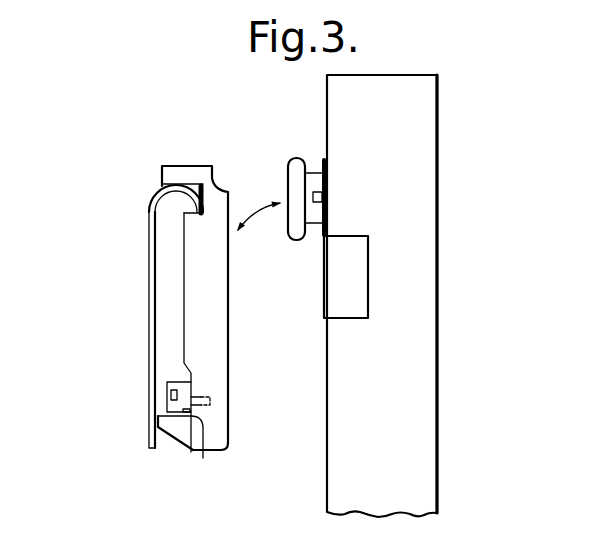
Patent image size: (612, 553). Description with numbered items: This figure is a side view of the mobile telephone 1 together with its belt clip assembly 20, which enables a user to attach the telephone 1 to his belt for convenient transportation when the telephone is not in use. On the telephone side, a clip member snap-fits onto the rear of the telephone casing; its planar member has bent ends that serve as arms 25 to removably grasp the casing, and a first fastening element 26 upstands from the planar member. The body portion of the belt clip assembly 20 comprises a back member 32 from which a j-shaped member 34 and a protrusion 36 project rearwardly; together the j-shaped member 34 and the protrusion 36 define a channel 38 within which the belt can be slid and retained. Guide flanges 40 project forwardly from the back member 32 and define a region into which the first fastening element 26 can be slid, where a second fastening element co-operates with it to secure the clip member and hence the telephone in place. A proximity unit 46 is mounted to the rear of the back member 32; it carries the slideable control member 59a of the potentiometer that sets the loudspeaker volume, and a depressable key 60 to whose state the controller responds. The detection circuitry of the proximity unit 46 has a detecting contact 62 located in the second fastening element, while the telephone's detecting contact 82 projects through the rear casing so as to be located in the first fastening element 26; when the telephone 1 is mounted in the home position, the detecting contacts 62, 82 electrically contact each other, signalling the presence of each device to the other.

The telephone 1 is at (438, 120).
The belt clip assembly 20 is at (145, 125).
The arms 25 is at (332, 287).
The first fastening element 26 is at (282, 157).
The back member 32 is at (192, 258).
The j-shaped member 34 is at (149, 369).
The protrusion 36 is at (178, 443).
The channel 38 is at (157, 425).
The guide flanges 40 is at (208, 312).
The proximity unit 46 is at (167, 378).
The slideable control member 59a is at (171, 396).
The depressable key 60 is at (205, 455).
The detecting contact 62 is at (210, 397).
The detecting contact 82 is at (315, 195).